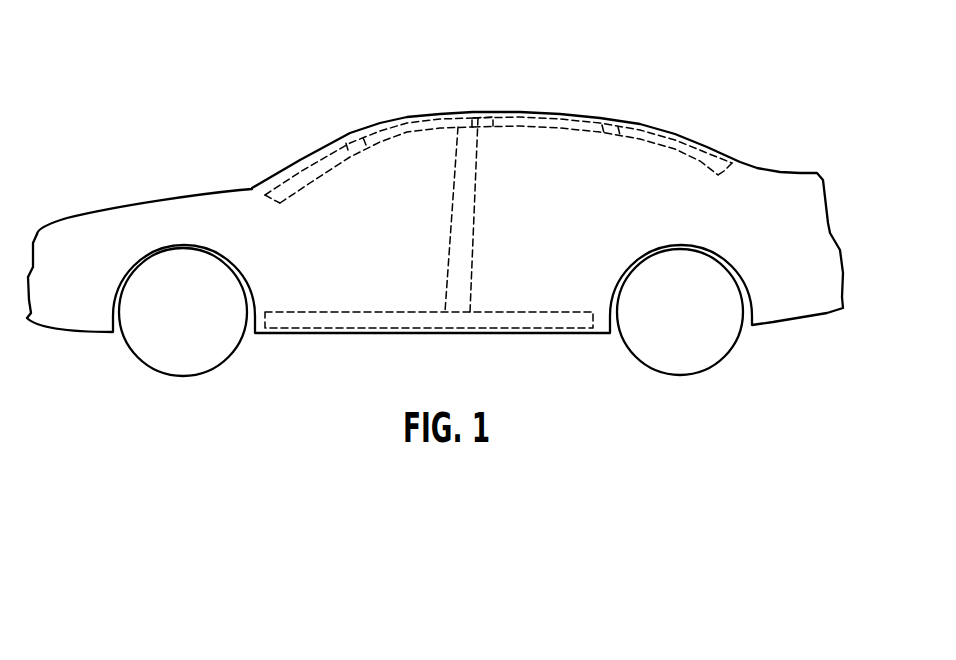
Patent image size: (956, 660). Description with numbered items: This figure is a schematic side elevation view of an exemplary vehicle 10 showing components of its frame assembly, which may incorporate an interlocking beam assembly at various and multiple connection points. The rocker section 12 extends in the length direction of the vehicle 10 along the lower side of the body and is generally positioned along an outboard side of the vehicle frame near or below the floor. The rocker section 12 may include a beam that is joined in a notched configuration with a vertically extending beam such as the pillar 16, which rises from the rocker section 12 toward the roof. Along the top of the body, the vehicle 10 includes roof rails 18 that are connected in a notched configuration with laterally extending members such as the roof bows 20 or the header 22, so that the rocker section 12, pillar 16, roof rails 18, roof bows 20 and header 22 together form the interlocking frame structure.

The vehicle 10 is at (200, 160).
The rocker section 12 is at (338, 336).
The pillar 16 is at (458, 175).
The roof rails 18 is at (641, 129).
The roof bows 20 is at (480, 113).
The header 22 is at (359, 144).